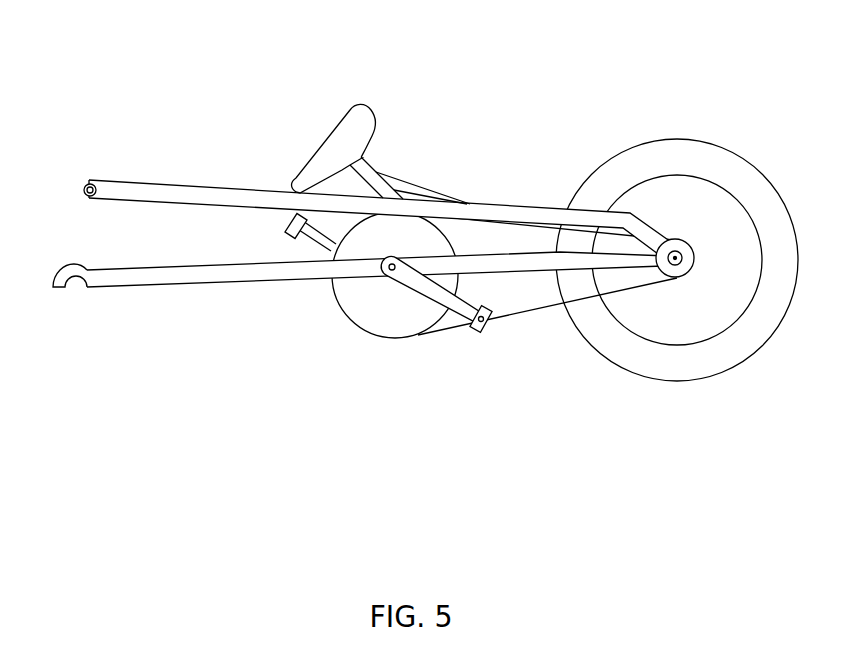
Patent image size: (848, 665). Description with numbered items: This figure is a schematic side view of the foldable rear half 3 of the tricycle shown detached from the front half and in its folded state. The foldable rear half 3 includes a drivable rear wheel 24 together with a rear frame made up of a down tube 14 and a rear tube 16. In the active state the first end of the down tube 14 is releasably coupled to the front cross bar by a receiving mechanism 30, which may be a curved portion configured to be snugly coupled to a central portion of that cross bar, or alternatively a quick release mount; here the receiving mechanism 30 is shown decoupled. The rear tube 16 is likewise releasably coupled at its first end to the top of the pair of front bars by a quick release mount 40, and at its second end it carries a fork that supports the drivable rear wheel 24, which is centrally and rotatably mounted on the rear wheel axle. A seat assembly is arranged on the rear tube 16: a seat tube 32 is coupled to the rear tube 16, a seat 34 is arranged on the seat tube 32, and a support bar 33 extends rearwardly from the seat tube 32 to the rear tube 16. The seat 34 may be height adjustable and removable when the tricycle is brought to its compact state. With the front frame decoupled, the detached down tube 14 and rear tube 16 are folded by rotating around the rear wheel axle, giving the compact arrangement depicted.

The foldable rear half 3 is at (640, 472).
The down tube 14 is at (193, 275).
The rear tube 16 is at (208, 193).
The drivable rear wheel 24 is at (662, 150).
The receiving mechanism 30 is at (63, 272).
The seat tube 32 is at (376, 172).
The support bar 33 is at (422, 193).
The seat 34 is at (352, 120).
The quick release mount 40 is at (85, 188).